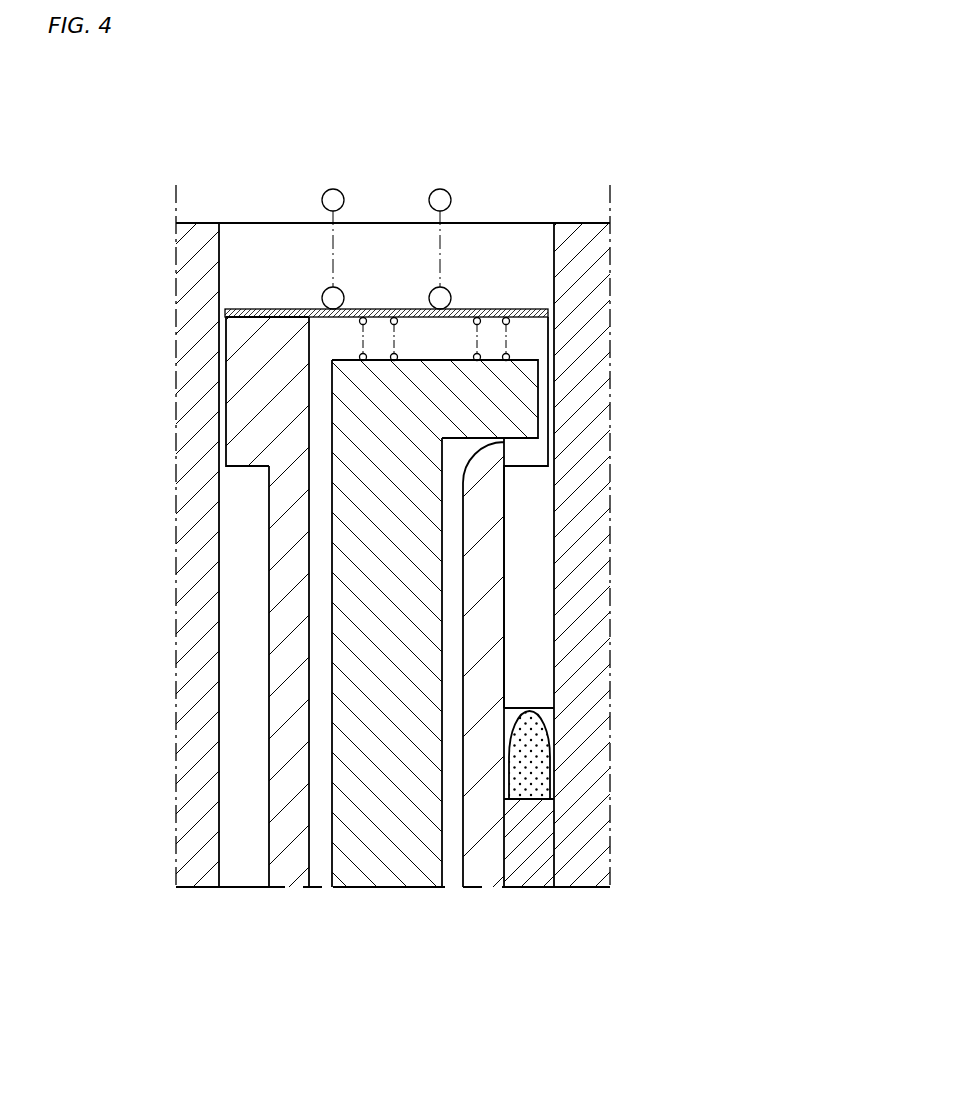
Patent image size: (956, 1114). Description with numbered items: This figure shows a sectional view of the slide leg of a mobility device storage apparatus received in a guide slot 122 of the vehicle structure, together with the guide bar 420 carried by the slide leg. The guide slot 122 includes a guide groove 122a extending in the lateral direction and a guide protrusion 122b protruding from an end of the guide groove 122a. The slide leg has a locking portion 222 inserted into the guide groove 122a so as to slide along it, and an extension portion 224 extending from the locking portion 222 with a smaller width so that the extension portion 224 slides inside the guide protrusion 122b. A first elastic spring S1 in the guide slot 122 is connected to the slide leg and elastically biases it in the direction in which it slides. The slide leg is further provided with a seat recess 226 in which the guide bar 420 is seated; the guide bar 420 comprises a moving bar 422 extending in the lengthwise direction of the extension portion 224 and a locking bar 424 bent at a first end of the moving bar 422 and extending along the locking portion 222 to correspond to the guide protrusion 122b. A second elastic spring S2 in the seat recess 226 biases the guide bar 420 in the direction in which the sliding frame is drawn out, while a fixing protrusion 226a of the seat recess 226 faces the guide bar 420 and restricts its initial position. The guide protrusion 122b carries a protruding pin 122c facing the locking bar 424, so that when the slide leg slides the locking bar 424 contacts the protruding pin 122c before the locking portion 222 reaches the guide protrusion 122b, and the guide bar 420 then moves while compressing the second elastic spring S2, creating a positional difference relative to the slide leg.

The first elastic spring S1 is at (442, 190).
The second elastic spring S2 is at (506, 357).
The locking portion 222 is at (233, 413).
The extension portion 224 is at (283, 735).
The seat recess 226 is at (325, 604).
The fixing protrusion 226a is at (492, 502).
The guide bar 420 is at (330, 822).
The moving bar 422 is at (519, 659).
The locking bar 424 is at (505, 400).
The guide slot 122 is at (685, 724).
The guide groove 122a is at (552, 693).
The guide protrusion 122b is at (537, 815).
The protruding pin 122c is at (521, 790).